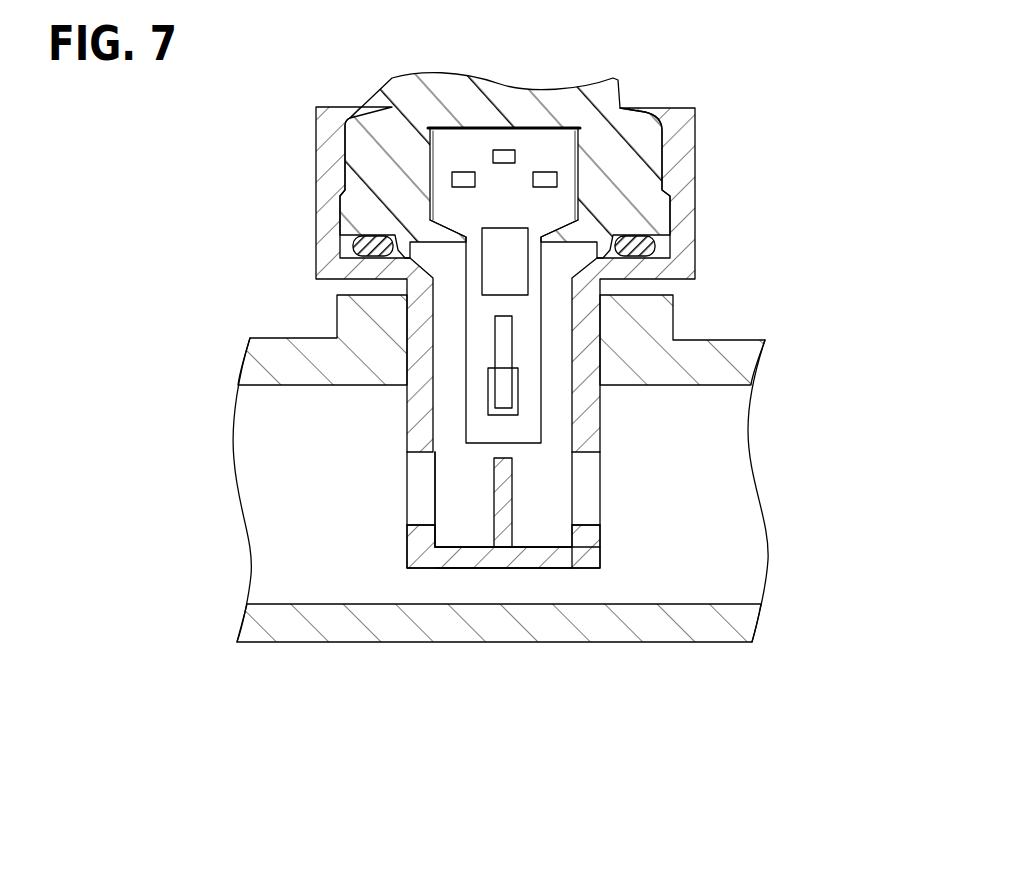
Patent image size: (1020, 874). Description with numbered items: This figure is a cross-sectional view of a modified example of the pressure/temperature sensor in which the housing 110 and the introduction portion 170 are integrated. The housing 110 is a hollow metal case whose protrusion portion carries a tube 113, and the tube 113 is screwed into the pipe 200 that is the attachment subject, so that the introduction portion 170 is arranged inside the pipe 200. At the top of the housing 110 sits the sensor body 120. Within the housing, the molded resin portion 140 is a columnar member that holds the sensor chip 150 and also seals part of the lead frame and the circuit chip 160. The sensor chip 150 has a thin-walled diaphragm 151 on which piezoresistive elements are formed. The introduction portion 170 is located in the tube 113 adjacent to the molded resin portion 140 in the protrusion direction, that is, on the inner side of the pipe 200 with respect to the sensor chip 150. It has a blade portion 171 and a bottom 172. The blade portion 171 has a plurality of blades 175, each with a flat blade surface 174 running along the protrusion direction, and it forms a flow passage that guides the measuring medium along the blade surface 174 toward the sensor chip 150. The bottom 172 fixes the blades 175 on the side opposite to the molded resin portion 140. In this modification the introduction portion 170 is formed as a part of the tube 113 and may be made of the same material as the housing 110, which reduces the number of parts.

The housing 110 is at (695, 172).
The tube 113 is at (601, 414).
The sensor body 120 is at (622, 96).
The molded resin portion 140 is at (467, 320).
The sensor chip 150 is at (505, 350).
The diaphragm 151 is at (500, 395).
The circuit chip 160 is at (507, 270).
The introduction portion 170 is at (433, 581).
The blade portion 171 is at (521, 497).
The bottom 172 is at (550, 555).
The blade surface 174 is at (492, 508).
The blade 175 is at (505, 523).
The pipe 200 is at (270, 622).